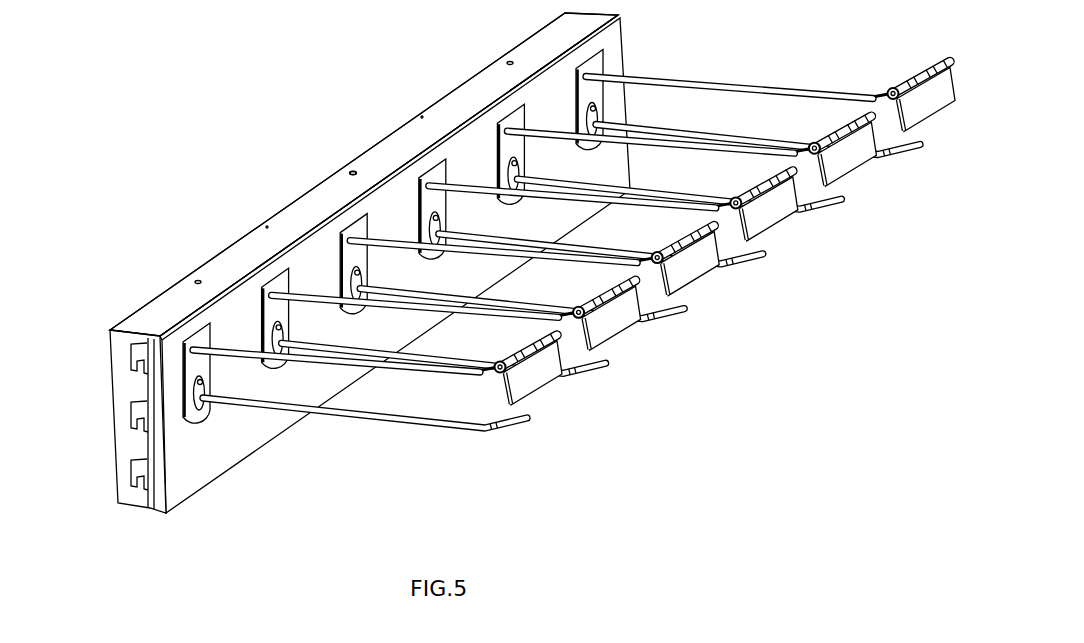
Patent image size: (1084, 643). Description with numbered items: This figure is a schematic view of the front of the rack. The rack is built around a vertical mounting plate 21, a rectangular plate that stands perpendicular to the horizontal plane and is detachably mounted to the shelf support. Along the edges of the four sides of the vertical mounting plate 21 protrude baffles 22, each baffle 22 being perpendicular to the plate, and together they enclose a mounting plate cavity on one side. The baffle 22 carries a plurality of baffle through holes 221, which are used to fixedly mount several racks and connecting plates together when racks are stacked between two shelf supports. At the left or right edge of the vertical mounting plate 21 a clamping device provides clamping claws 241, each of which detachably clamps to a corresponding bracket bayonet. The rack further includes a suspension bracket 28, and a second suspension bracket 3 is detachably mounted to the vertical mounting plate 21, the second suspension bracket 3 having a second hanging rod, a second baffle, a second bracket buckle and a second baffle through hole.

The vertical mounting plate 21 is at (370, 273).
The baffle 22 is at (336, 205).
The baffle through hole 221 is at (306, 143).
The clamping claw 241 is at (96, 432).
The suspension bracket 28 is at (365, 441).
The second suspension bracket 3 is at (523, 395).